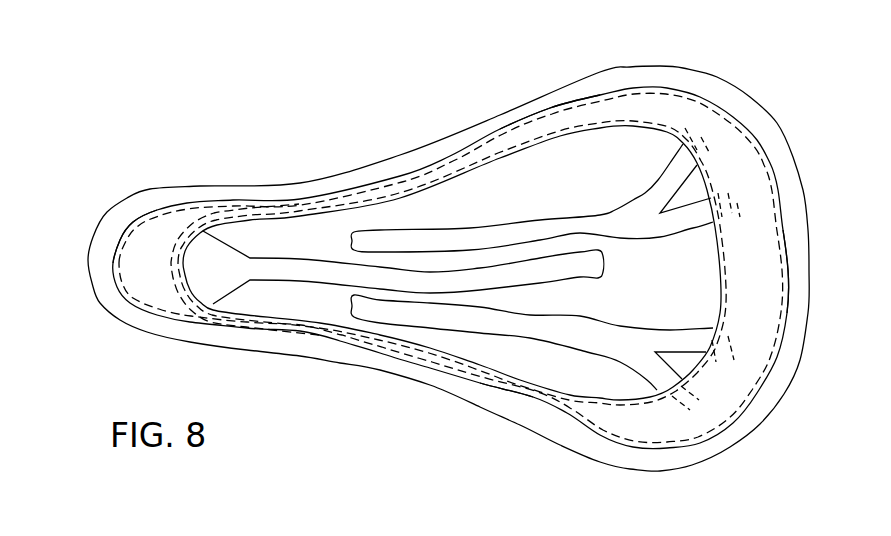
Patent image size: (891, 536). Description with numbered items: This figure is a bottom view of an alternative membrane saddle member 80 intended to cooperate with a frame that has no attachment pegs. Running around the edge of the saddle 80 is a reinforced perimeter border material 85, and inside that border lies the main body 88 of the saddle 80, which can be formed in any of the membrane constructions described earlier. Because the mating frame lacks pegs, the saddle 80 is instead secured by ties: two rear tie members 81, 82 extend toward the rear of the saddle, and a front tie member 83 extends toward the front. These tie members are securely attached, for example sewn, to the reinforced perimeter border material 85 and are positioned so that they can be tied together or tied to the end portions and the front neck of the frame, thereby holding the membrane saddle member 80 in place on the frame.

The membrane saddle member 80 is at (395, 148).
The rear tie member 81 is at (533, 324).
The rear tie member 82 is at (597, 230).
The front tie member 83 is at (322, 268).
The reinforced perimeter border material 85 is at (148, 256).
The main body 88 is at (547, 179).